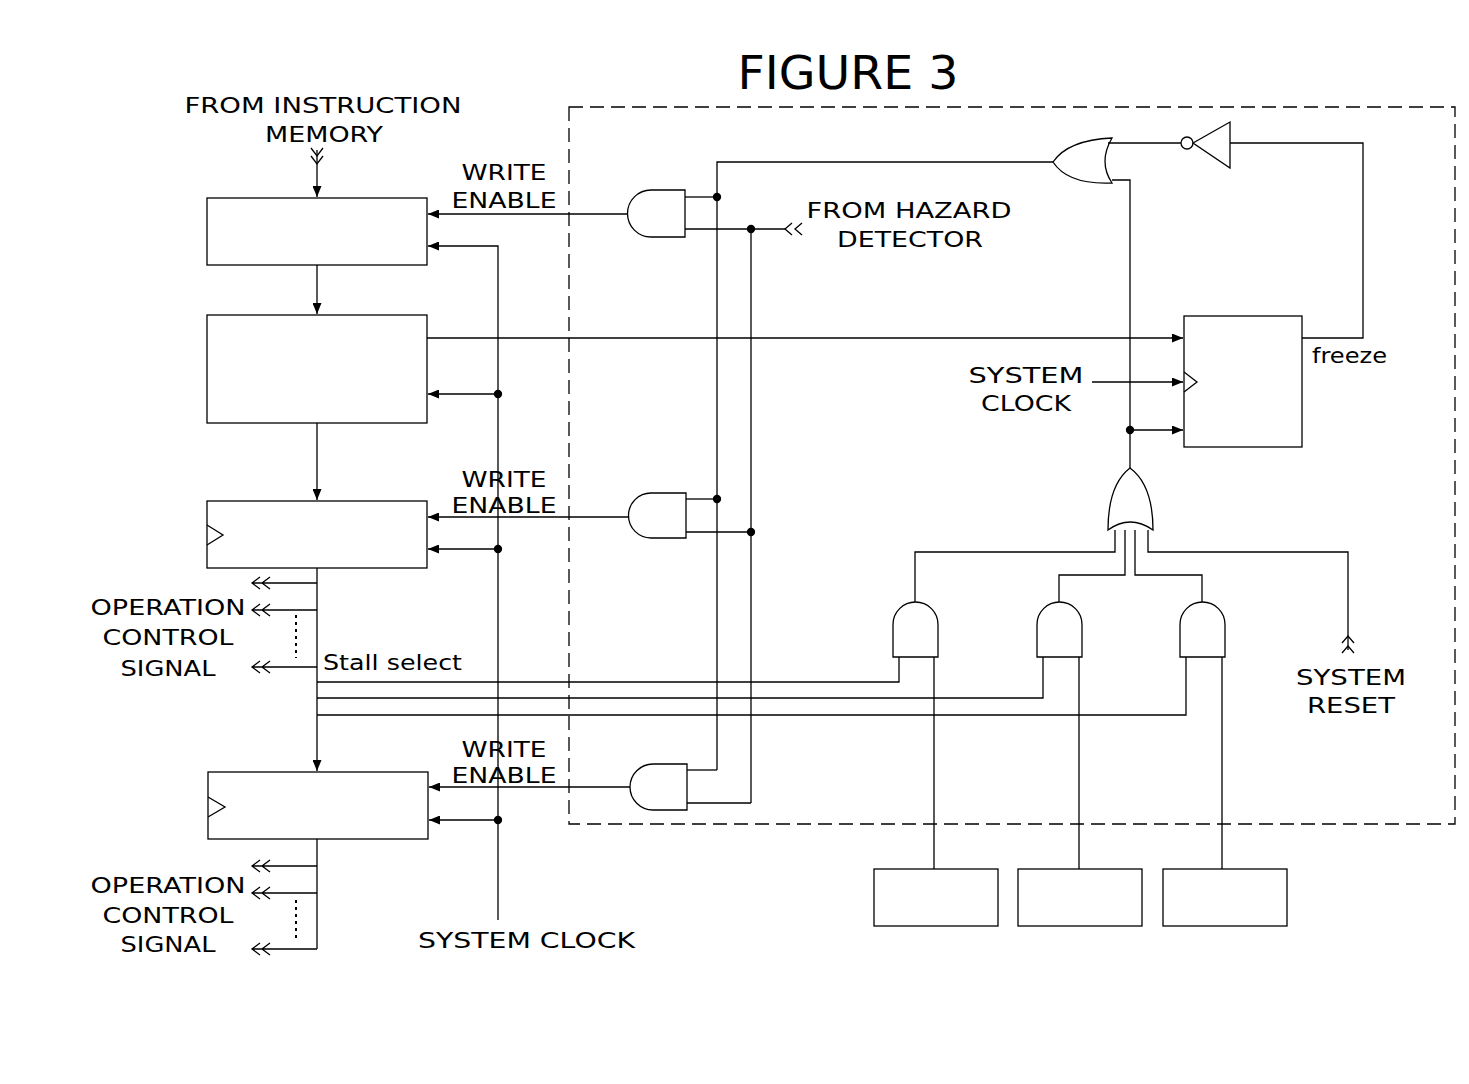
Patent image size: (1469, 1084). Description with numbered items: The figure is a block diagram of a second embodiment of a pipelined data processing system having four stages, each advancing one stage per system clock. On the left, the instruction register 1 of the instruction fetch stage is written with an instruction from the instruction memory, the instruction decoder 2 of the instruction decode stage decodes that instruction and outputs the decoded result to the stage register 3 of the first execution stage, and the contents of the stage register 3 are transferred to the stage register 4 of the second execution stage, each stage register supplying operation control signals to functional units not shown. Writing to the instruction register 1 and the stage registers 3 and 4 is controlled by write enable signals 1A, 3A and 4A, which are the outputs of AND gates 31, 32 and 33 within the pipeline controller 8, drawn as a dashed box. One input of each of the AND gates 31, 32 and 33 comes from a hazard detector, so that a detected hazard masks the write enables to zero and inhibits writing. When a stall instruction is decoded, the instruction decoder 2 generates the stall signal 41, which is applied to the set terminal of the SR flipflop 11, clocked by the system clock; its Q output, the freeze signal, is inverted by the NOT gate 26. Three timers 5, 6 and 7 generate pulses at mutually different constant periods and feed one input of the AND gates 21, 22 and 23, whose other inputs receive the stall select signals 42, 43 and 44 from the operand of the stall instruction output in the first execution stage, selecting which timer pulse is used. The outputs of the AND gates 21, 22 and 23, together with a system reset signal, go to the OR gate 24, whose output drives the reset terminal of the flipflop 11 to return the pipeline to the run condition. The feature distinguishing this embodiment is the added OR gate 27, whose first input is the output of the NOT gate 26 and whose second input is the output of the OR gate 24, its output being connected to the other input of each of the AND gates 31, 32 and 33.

The instruction register 1 is at (397, 198).
The write enable signal 1A is at (592, 213).
The instruction decoder 2 is at (420, 315).
The stage register 3 is at (380, 501).
The write enable signal 3A is at (598, 515).
The stage register 4 is at (385, 840).
The write enable signal 4A is at (590, 786).
The timer 5 is at (998, 869).
The timer 6 is at (1142, 869).
The timer 7 is at (1287, 869).
The pipeline controller 8 is at (1398, 826).
The SR flipflop 11 is at (1258, 449).
The AND gate 21 is at (938, 628).
The AND gate 22 is at (1082, 628).
The AND gate 23 is at (1225, 628).
The OR gate 24 is at (1153, 498).
The NOT gate 26 is at (1205, 170).
The OR gate 27 is at (1065, 185).
The AND gate 31 is at (660, 238).
The AND gate 32 is at (660, 539).
The AND gate 33 is at (648, 764).
The stall signal 41 is at (873, 340).
The stall select signal 42 is at (787, 682).
The stall select signal 43 is at (832, 698).
The stall select signal 44 is at (872, 715).